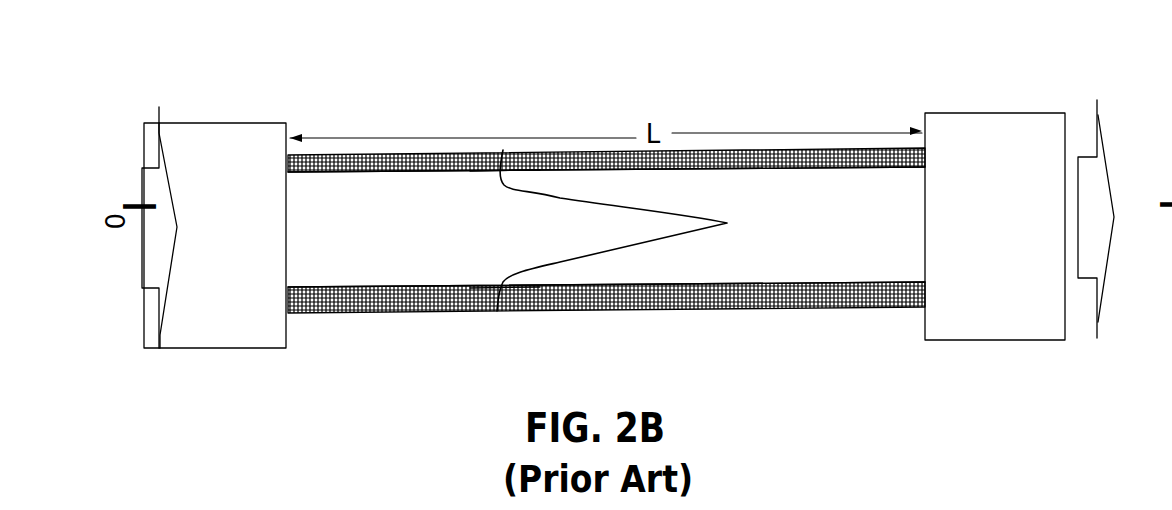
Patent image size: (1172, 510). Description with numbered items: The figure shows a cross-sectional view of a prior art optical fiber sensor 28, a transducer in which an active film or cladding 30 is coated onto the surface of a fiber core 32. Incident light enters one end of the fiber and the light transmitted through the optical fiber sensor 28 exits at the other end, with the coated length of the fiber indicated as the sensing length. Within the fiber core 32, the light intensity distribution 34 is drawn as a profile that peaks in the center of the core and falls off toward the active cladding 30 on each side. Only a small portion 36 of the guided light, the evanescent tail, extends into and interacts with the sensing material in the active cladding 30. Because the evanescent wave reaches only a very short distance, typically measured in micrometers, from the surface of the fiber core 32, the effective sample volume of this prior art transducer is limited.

The optical fiber sensor 28 is at (606, 201).
The active film cladding 30 is at (412, 154).
The fiber core 32 is at (606, 227).
The light intensity distribution 34 is at (700, 236).
The small portion of guided light (evanescent tail) 36 is at (503, 155).